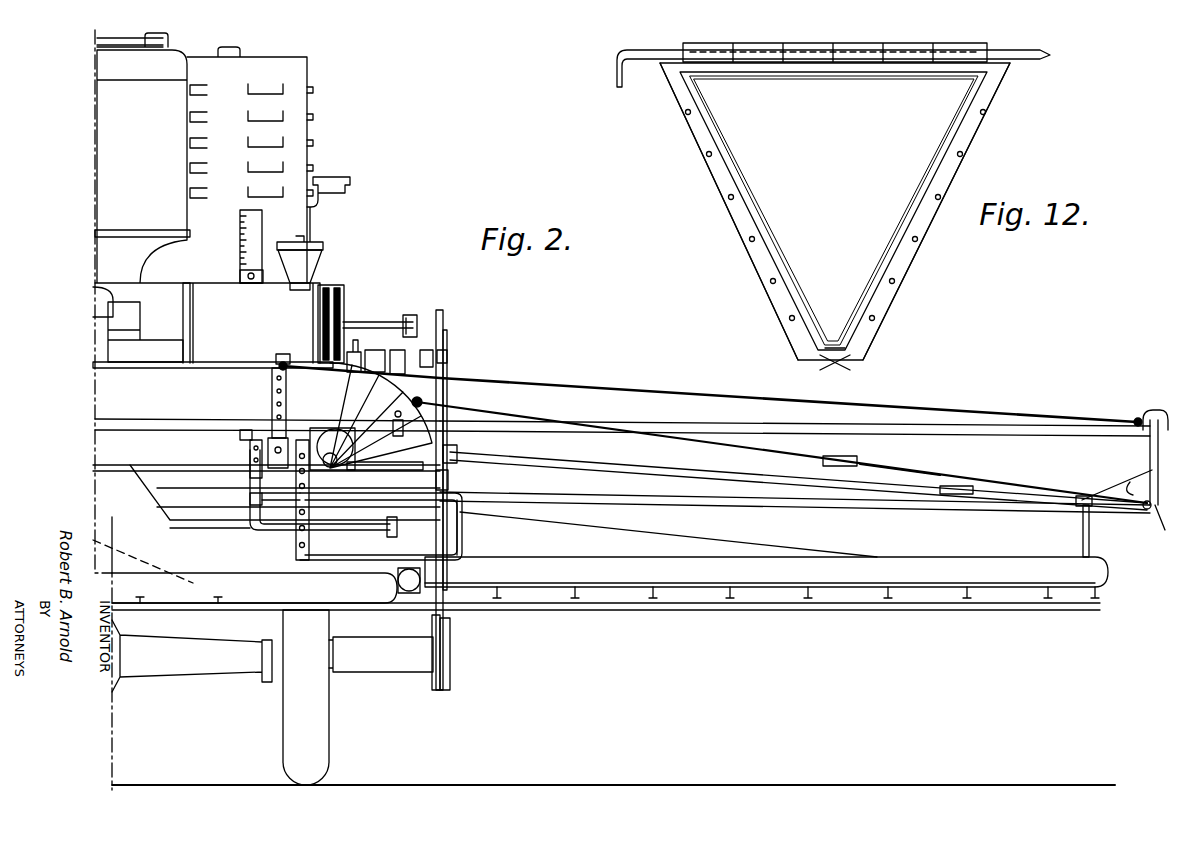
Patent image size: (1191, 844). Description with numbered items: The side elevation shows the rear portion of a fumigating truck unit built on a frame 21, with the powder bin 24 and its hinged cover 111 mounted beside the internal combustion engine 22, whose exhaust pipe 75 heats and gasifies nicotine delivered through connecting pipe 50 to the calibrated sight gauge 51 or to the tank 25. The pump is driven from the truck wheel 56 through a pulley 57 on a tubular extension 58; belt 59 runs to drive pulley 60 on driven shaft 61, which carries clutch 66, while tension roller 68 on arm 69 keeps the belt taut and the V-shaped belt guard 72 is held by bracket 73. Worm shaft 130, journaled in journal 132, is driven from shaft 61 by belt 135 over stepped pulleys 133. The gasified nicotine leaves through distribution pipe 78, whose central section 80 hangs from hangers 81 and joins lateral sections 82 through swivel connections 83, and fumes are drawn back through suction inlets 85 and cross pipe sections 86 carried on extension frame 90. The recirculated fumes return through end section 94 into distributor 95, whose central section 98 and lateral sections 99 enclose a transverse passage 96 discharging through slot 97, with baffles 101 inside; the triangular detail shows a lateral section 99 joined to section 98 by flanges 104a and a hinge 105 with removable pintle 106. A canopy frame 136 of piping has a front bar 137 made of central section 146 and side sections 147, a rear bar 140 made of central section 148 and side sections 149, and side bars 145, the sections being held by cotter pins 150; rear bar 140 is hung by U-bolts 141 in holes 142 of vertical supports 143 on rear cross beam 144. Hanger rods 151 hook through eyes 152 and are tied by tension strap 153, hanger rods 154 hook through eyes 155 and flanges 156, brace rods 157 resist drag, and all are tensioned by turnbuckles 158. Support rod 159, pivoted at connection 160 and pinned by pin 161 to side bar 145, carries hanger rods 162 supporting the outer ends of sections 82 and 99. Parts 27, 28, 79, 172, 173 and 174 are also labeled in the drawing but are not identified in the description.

In FIG. 2, the hinged cover 111 is at (95, 45).
In FIG. 2, the bin 24 is at (138, 110).
In FIG. 2, the internal combustion engine 22 is at (230, 140).
In FIG. 2, the valve fitting 28 is at (320, 245).
In FIG. 2, the hopper 27 is at (300, 268).
In FIG. 2, the calibrated glass sight gauge 51 is at (240, 247).
In FIG. 2, the connecting pipe 50 is at (251, 283).
In FIG. 2, the tank 25 is at (235, 345).
In FIG. 2, the tension strap 153 is at (143, 367).
In FIG. 2, the cross pipe sections 86 is at (197, 390).
In FIG. 2, the central section 148 is at (138, 423).
In FIG. 2, the side sections 149 is at (605, 428).
In FIG. 2, the rear cross beam 144 is at (167, 447).
In FIG. 2, the rear end section 94 is at (123, 466).
In FIG. 2, the distributor 95 is at (197, 528).
In FIG. 2, the central section 98 is at (247, 525).
In FIG. 12, the central section 98 is at (947, 128).
In FIG. 2, the exhaust pipe 75 is at (98, 528).
In FIG. 2, the baffles 101 is at (150, 553).
In FIG. 2, the holes 142 is at (287, 383).
In FIG. 2, the vertical supports 143 is at (280, 358).
In FIG. 2, the eyes 152 is at (1138, 418).
In FIG. 2, the U-bolts 141 is at (275, 417).
In FIG. 2, the rear bar 140 is at (245, 432).
In FIG. 2, the bracket 173 is at (255, 448).
In FIG. 2, the extension frame 90 is at (320, 440).
In FIG. 2, the frame 21 is at (328, 465).
In FIG. 2, the clutch 66 is at (382, 383).
In FIG. 2, the cotter pins 150 is at (398, 425).
In FIG. 2, the suction inlets 85 is at (413, 470).
In FIG. 2, the worm shaft 130 is at (370, 325).
In FIG. 2, the pulleys 133 is at (338, 292).
In FIG. 2, the journal 132 is at (407, 315).
In FIG. 2, the belt 135 is at (278, 359).
In FIG. 2, the arm 69 is at (426, 350).
In FIG. 2, the belt 59 is at (441, 320).
In FIG. 2, the drive pulley 60 is at (447, 340).
In FIG. 2, the driven shaft 61 is at (448, 358).
In FIG. 2, the hanger rods 151 is at (705, 392).
In FIG. 2, the flanges 156 is at (424, 402).
In FIG. 2, the brace rods 157 is at (620, 472).
In FIG. 2, the hanger rods 154 is at (978, 478).
In FIG. 2, the turn buckles 158 is at (860, 462).
In FIG. 2, the bracket 73 is at (457, 452).
In FIG. 2, the side sections 147 is at (700, 500).
In FIG. 2, the tension roller 68 is at (449, 478).
In FIG. 2, the frame 136 is at (1020, 505).
In FIG. 2, the side bars 145 is at (1150, 450).
In FIG. 2, the support rod 159 is at (1120, 490).
In FIG. 2, the eyes 155 is at (1145, 507).
In FIG. 2, the pin 161 is at (1158, 510).
In FIG. 2, the pivotal connection 160 is at (1076, 506).
In FIG. 2, the hanger rods 162 is at (1082, 540).
In FIG. 2, the lateral sections 99 is at (645, 550).
In FIG. 12, the lateral sections 99 is at (968, 120).
In FIG. 2, the pipe 78 is at (230, 573).
In FIG. 2, the lateral pipe sections 82 is at (865, 573).
In FIG. 2, the pins 79 is at (808, 598).
In FIG. 2, the central pipe section 80 is at (260, 592).
In FIG. 2, the swivel connections 83 is at (406, 593).
In FIG. 2, the truck wheel 56 is at (320, 660).
In FIG. 2, the tubular extension 58 is at (400, 655).
In FIG. 2, the pulley 57 is at (441, 637).
In FIG. 2, the belt guard 72 is at (450, 665).
In FIG. 2, the hangers 81 is at (310, 546).
In FIG. 2, the front bar 137 is at (330, 503).
In FIG. 2, the central section 146 is at (258, 500).
In FIG. 2, the tube loop 172 is at (462, 546).
In FIG. 2, the tube 174 is at (462, 516).
In FIG. 12, the hinge 105 is at (905, 62).
In FIG. 12, the removable pintle 106 is at (1028, 56).
In FIG. 12, the transverse passage 96 is at (878, 155).
In FIG. 12, the flange 104a is at (900, 262).
In FIG. 12, the discharge slot 97 is at (830, 350).